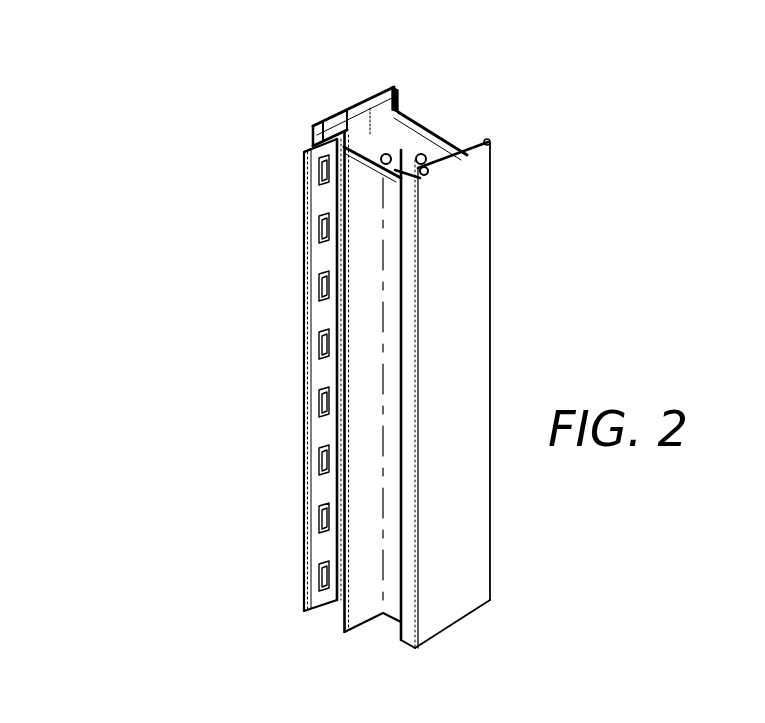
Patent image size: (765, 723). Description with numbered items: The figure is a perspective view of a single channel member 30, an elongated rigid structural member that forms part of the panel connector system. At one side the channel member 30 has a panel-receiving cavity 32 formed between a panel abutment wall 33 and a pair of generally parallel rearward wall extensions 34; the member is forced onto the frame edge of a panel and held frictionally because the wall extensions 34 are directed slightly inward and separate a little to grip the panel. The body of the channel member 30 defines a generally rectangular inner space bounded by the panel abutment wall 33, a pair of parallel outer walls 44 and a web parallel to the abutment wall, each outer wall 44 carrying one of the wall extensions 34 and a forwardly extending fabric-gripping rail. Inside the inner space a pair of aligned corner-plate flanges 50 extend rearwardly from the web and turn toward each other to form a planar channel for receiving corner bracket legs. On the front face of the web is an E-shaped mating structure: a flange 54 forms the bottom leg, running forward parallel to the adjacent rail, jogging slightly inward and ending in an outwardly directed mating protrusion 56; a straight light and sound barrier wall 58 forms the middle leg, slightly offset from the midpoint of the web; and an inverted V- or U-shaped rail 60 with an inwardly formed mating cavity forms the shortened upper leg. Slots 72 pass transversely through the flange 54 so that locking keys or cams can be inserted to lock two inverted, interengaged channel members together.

The channel member 30 is at (170, 64).
The panel-receiving cavity 32 is at (452, 122).
The panel abutment wall 33 is at (424, 121).
The rearward wall extensions 34 is at (398, 86).
The outer walls 44 is at (470, 293).
The corner-plate flanges 50 is at (352, 111).
The flange 54 is at (330, 603).
The mating protrusion 56 is at (307, 148).
The light and sound barrier wall 58 is at (362, 612).
The rail 60 is at (398, 240).
The slots 72 is at (322, 479).